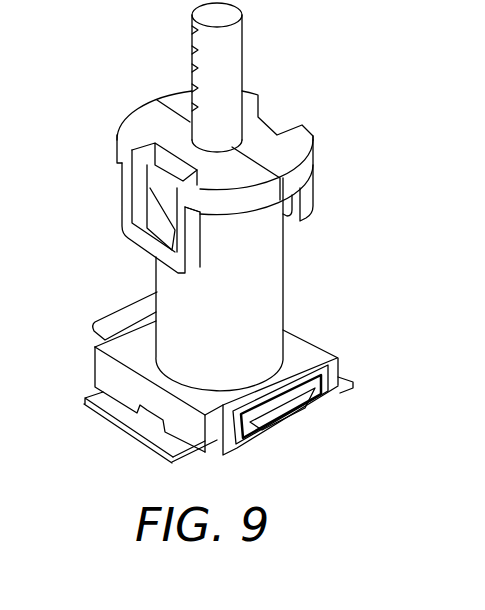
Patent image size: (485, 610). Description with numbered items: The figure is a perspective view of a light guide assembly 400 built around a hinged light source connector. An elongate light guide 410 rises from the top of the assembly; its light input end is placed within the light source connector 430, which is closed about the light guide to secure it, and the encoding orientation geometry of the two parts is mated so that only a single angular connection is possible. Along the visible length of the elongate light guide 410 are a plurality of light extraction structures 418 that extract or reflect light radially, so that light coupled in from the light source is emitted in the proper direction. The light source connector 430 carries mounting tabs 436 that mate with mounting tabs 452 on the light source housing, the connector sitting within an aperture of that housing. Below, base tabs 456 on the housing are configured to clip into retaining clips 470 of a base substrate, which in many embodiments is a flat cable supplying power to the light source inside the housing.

The light guide assembly 400 is at (318, 105).
The elongate light guide 410 is at (230, 38).
The light extraction structures 418 is at (190, 50).
The light source connector 430 is at (267, 273).
The mounting tabs 436 is at (120, 193).
The mounting tabs 452 is at (152, 230).
The base tabs 456 is at (277, 410).
The retaining clips 470 is at (322, 392).